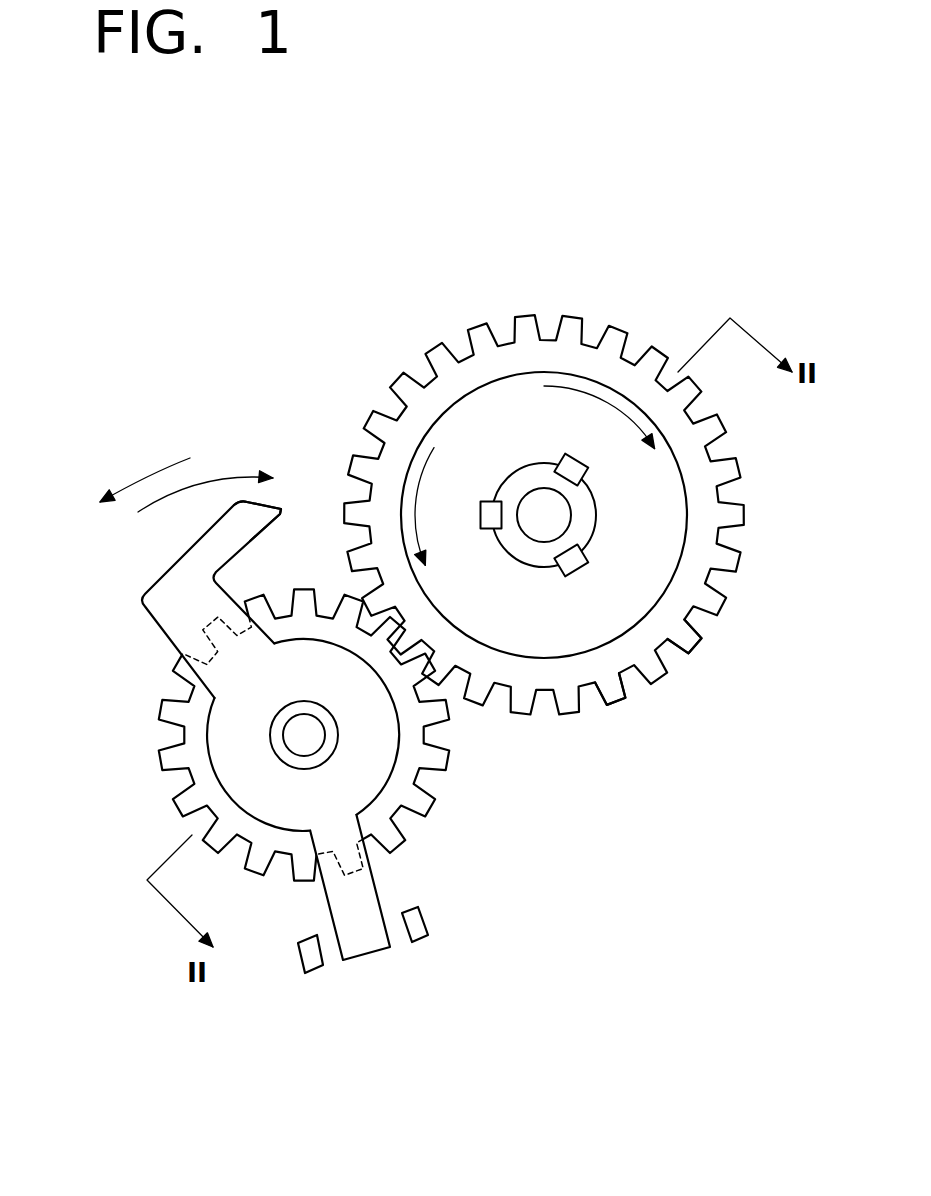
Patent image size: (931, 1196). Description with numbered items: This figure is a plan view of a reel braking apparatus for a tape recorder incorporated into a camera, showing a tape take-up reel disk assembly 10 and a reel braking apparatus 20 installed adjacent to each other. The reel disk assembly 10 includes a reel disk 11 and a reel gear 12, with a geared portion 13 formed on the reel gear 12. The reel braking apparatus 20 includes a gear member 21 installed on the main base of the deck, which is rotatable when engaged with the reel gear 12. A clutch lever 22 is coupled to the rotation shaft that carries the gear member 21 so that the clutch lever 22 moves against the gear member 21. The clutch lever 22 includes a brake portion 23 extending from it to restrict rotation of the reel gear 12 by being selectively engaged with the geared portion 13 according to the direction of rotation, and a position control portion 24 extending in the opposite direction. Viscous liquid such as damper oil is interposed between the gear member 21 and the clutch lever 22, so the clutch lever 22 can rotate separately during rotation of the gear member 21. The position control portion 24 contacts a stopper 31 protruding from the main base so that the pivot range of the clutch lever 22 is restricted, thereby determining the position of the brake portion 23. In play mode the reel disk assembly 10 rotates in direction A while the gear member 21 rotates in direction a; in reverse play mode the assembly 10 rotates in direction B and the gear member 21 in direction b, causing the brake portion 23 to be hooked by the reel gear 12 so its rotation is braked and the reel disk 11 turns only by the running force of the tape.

The tape take-up reel disk assembly 10 is at (576, 498).
The reel disk 11 is at (689, 566).
The reel gear 12 is at (615, 703).
The geared portion 13 is at (682, 640).
The reel braking apparatus 20 is at (278, 679).
The gear member 21 is at (442, 755).
The clutch lever 22 is at (140, 603).
The brake portion 23 is at (282, 512).
The position control portion 24 is at (372, 898).
The stopper 31 is at (308, 967).